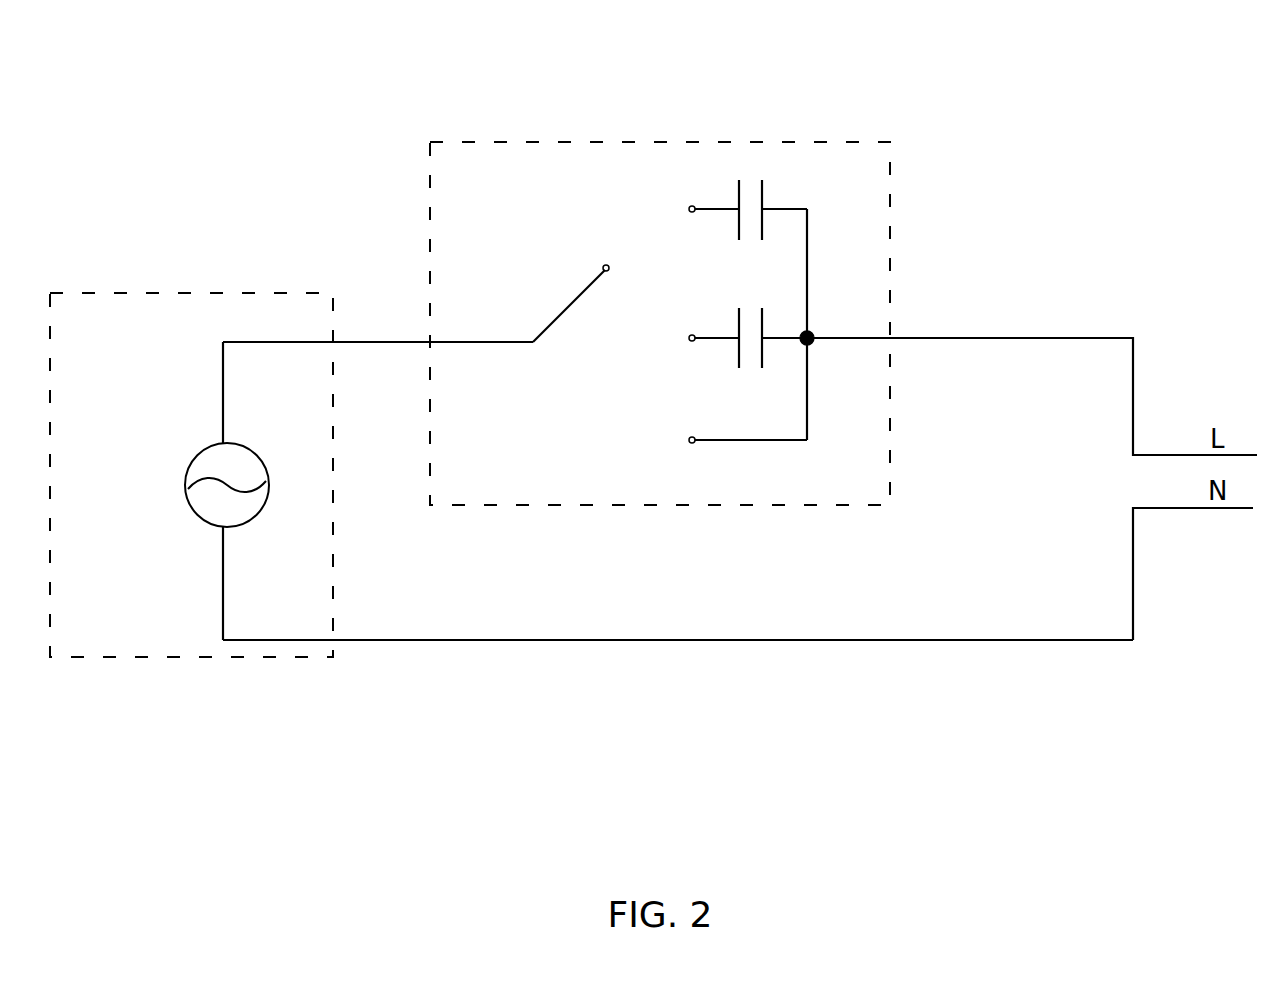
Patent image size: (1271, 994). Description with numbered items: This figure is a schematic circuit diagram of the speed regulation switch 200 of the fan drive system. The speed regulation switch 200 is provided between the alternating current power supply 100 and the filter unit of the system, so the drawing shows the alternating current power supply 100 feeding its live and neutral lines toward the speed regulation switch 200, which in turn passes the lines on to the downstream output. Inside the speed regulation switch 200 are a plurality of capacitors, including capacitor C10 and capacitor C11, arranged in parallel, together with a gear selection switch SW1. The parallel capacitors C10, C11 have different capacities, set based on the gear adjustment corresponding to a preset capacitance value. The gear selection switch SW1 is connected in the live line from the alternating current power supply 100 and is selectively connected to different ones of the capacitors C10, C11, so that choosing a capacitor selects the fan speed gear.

The alternating current power supply 100 is at (142, 293).
The speed regulation switch 200 is at (660, 261).
The gear selection switch SW1 is at (537, 303).
The capacitor C10 is at (748, 192).
The capacitor C11 is at (748, 316).